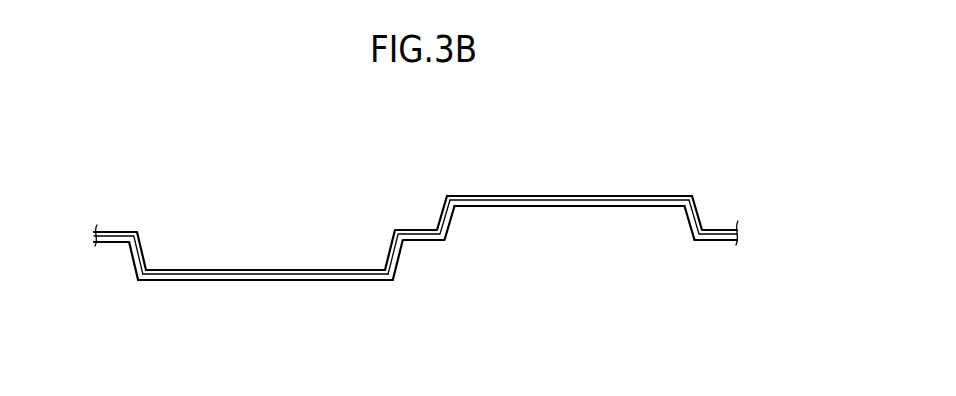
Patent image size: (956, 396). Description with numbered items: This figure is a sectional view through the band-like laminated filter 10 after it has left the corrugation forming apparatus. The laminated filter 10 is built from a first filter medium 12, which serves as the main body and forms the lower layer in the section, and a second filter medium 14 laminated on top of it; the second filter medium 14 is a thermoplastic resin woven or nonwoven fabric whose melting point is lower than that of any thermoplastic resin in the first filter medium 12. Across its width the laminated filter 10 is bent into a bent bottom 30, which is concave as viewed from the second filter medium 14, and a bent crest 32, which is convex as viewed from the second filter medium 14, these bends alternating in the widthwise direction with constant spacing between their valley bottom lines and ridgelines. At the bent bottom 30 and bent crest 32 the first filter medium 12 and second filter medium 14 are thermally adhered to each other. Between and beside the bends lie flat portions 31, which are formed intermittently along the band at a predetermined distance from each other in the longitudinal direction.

The laminated filter 10 is at (500, 157).
The first filter medium 12 is at (711, 241).
The second filter medium 14 is at (644, 196).
The bent bottom 30 is at (264, 269).
The flat portion 31 is at (119, 231).
The bent crest 32 is at (557, 195).